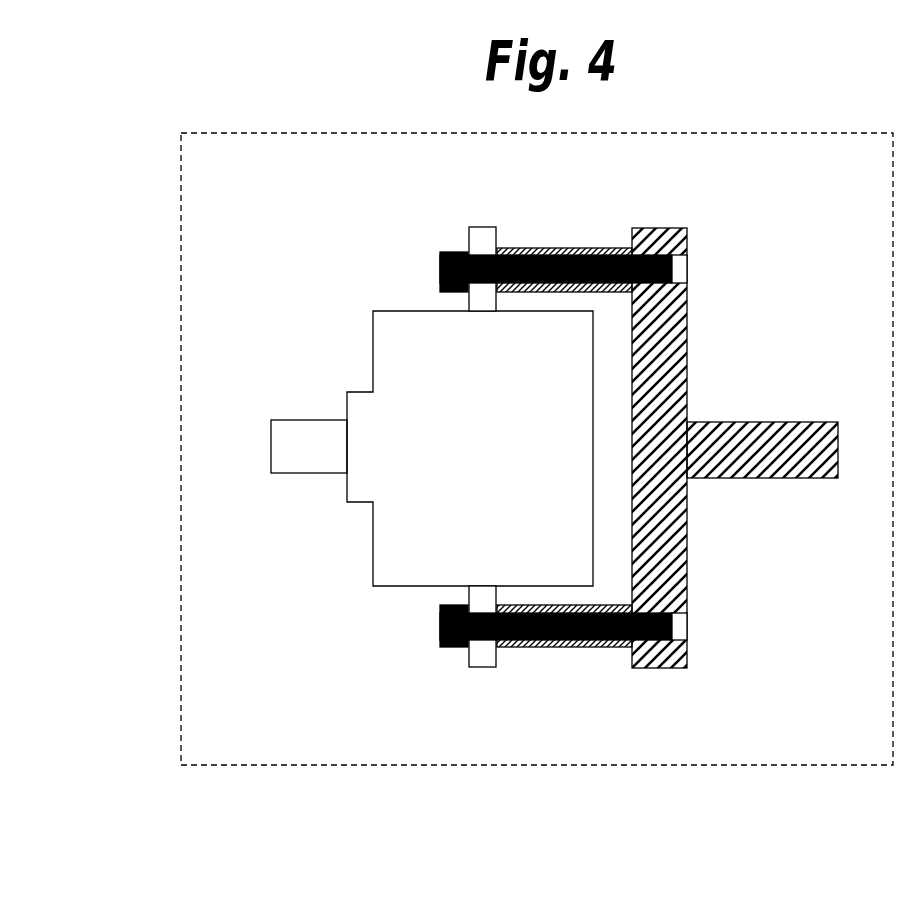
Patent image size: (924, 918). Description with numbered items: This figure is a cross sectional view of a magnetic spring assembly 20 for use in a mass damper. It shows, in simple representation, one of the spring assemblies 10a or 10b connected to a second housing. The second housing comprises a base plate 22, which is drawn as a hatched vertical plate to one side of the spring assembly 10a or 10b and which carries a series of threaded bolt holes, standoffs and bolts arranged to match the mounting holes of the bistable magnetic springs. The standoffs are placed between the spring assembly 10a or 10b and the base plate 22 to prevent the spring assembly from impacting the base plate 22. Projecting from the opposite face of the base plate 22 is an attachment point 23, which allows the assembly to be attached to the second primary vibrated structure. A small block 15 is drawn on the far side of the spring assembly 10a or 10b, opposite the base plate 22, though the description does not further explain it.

The magnetic spring assembly 20 is at (176, 448).
The spring assembly 10a is at (422, 421).
The spring assembly 10b is at (422, 421).
The connector / protrusion 15 is at (272, 482).
The base plate 22 is at (667, 350).
The attachment point 23 is at (780, 443).